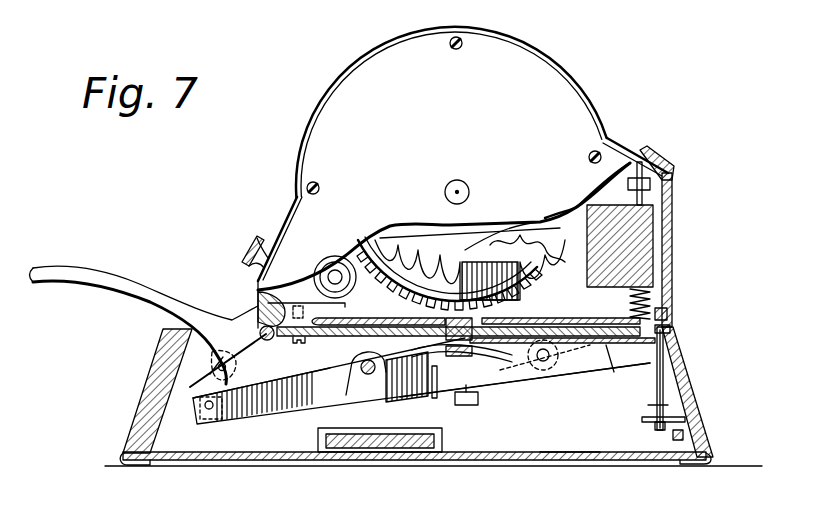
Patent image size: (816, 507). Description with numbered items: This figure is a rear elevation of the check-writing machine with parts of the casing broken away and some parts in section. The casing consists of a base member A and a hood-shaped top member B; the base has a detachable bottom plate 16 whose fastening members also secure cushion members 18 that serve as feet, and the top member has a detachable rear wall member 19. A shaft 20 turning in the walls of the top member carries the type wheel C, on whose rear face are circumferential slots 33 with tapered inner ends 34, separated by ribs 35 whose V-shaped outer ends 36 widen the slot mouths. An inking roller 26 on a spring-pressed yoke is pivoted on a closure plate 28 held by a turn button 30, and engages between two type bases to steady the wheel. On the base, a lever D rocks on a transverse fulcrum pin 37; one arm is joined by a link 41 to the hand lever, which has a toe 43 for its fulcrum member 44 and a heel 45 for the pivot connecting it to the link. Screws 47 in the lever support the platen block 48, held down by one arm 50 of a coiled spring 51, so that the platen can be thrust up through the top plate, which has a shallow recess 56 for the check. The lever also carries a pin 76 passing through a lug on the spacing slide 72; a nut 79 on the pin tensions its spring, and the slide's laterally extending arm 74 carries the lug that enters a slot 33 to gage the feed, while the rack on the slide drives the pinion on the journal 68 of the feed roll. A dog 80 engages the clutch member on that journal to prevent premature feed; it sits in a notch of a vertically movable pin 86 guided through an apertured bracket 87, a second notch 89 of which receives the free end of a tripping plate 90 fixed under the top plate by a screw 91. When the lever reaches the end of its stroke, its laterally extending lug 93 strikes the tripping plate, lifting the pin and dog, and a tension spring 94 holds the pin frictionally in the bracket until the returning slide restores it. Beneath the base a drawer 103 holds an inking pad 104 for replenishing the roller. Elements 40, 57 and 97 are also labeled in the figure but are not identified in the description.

The bottom plate 16 is at (555, 461).
The cushion members 18 is at (278, 462).
The rear wall member 19 is at (548, 87).
The shaft 20 is at (462, 181).
The inking roller 26 is at (340, 270).
The plate 28 is at (292, 230).
The turn button 30 is at (242, 259).
The slots or notches 33 is at (527, 246).
The tapered inner ends 34 is at (470, 264).
The ribs or fingers 35 is at (545, 218).
The V-shaped outer ends 36 is at (372, 244).
The transverse pin or fulcrum member 37 is at (360, 395).
The link 40 is at (218, 362).
The link 41 is at (206, 390).
The toe 43 is at (254, 320).
The fulcrum member 44 is at (240, 360).
The heel 45 is at (215, 378).
The screws 47 is at (126, 290).
The block 48 is at (468, 358).
The arm of coiled spring 50 is at (416, 393).
The coiled spring 51 is at (532, 372).
The shallow recess 56 is at (357, 337).
The plate 57 is at (348, 320).
The journal 68 is at (655, 306).
The slide 72 is at (630, 237).
The laterally extending arm 74 is at (465, 250).
The pin 76 is at (650, 196).
The nut 79 is at (655, 185).
The dog or pawl 80 is at (672, 328).
The pin or bolt 86 is at (664, 390).
The apertured bracket 87 is at (642, 420).
The second notch 89 is at (670, 345).
The tripping plate 90 is at (565, 356).
The screw or fastening member 91 is at (552, 322).
The laterally extending lug 93 is at (616, 368).
The tension spring 94 is at (669, 406).
The bushing 97 is at (668, 314).
The drawer 103 is at (335, 461).
The inking pad 104 is at (408, 449).
The base member A is at (140, 428).
The top member B is at (457, 154).
The type wheel C is at (437, 236).
The lever D is at (325, 396).